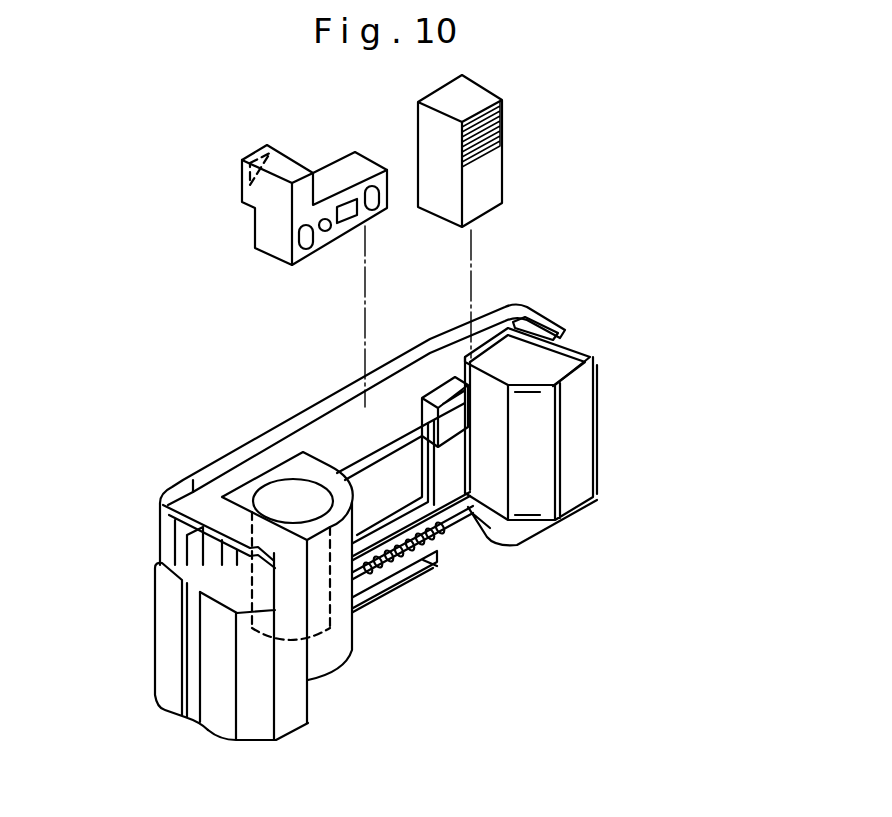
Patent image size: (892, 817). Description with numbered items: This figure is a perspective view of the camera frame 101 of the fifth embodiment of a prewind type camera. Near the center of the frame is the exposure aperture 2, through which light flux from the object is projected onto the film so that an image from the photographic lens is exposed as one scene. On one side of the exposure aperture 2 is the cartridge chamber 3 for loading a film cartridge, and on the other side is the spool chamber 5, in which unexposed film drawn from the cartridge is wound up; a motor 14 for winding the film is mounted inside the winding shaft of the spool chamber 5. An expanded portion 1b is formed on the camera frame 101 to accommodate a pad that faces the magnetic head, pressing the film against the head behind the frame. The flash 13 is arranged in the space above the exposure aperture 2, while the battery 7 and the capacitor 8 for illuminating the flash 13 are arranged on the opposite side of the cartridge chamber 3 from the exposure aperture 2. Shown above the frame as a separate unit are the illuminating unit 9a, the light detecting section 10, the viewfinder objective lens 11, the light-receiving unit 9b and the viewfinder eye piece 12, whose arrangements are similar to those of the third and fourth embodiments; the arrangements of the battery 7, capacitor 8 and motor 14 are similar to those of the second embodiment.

The camera frame 101 is at (400, 510).
The viewfinder eye piece 12 is at (310, 223).
The flash 13 is at (497, 172).
The illuminating unit 9a is at (302, 245).
The light-receiving unit 9b is at (379, 199).
The light detecting section 10 is at (324, 231).
The viewfinder objective lens 11 is at (347, 226).
The expanded portion 1b is at (448, 387).
The spool chamber 5 is at (291, 490).
The motor 14 is at (291, 490).
The cartridge chamber 3 is at (585, 408).
The exposure aperture 2 is at (424, 465).
The capacitor 8 is at (172, 692).
The battery 7 is at (222, 722).